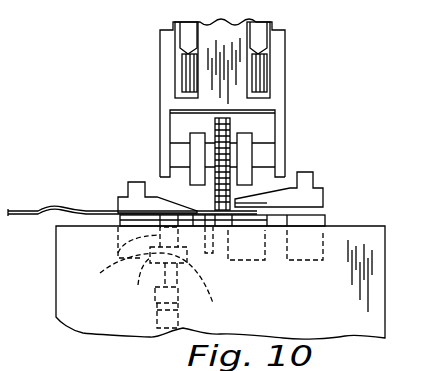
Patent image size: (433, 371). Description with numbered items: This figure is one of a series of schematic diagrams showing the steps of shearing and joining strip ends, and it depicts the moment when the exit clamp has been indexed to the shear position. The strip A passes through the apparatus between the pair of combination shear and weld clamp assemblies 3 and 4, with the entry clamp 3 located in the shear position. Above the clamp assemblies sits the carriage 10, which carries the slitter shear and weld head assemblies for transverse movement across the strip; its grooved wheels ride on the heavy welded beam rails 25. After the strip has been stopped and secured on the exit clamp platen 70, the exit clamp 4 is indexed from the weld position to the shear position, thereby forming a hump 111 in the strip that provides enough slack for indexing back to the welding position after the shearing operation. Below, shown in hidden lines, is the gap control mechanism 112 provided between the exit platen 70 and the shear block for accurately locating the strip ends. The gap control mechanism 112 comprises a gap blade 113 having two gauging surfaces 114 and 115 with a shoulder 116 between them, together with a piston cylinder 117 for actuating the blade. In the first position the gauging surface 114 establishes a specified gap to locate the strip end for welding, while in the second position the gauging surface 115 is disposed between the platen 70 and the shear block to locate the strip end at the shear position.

The combination shear and weld clamp assembly 3 is at (290, 172).
The combination shear and weld clamp assembly 4 is at (130, 174).
The carriage 10 is at (288, 75).
The welded beam rails 25 is at (265, 33).
The platen 70 is at (117, 265).
The hump 111 is at (70, 211).
The gap control mechanism 112 is at (157, 308).
The gap blade 113 is at (178, 288).
The gauging surface 114 is at (118, 252).
The gauging surface 115 is at (165, 270).
The shoulder 116 is at (187, 263).
The piston cylinder 117 is at (178, 317).
The strip A is at (22, 215).